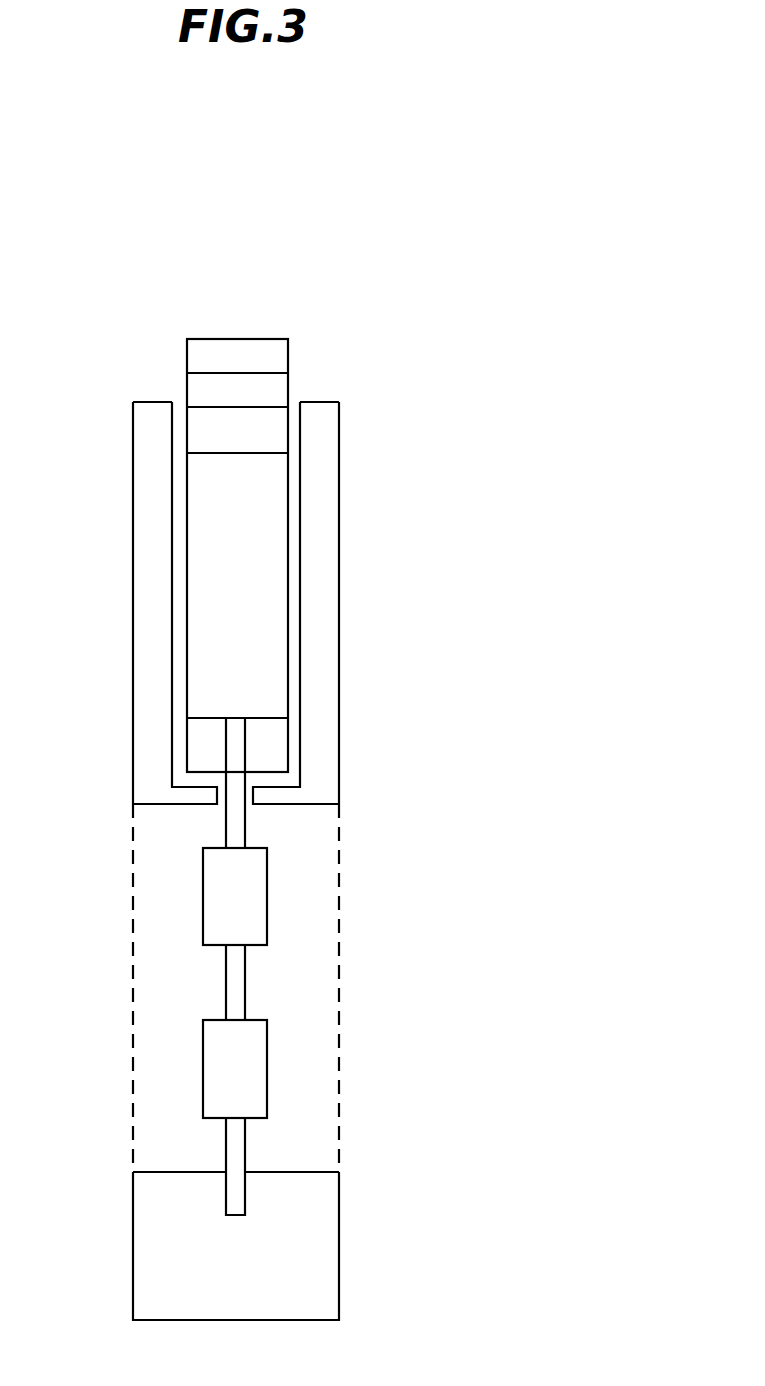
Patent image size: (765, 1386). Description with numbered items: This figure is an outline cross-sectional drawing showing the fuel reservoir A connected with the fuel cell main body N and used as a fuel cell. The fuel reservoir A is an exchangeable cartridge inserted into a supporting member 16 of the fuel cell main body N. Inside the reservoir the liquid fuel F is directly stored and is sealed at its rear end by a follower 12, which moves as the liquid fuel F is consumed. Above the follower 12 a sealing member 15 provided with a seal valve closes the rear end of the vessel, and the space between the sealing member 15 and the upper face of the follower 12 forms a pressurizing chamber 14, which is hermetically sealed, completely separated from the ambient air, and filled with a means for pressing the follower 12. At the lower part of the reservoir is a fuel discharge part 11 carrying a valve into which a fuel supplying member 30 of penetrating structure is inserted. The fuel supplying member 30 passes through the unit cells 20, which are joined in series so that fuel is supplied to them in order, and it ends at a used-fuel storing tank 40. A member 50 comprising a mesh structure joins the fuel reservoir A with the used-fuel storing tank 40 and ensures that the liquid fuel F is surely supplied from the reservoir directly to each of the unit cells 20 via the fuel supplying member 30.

The fuel discharge part 11 is at (277, 745).
The follower 12 is at (272, 435).
The pressurizing chamber 14 is at (207, 391).
The sealing member 15 is at (202, 353).
The supporting member 16 is at (323, 570).
The unit cell 20 is at (248, 908).
The fuel supplying member 30 is at (238, 827).
The used-fuel storing tank 40 is at (312, 1232).
The mesh structure member 50 is at (338, 1008).
The fuel reservoir A is at (303, 365).
The fuel cell main body N is at (363, 417).
The liquid fuel F is at (212, 590).